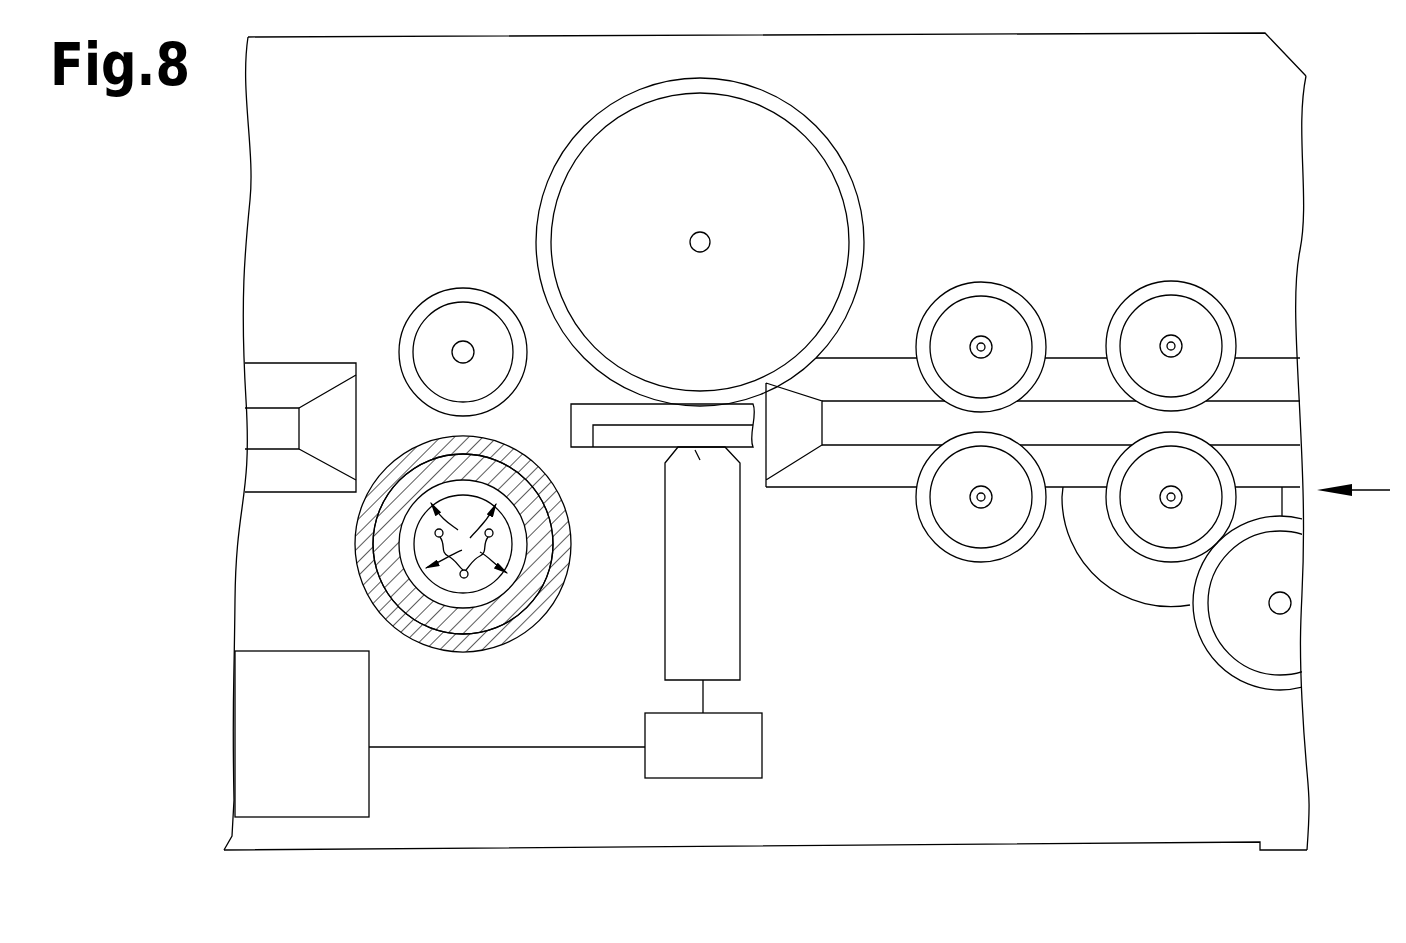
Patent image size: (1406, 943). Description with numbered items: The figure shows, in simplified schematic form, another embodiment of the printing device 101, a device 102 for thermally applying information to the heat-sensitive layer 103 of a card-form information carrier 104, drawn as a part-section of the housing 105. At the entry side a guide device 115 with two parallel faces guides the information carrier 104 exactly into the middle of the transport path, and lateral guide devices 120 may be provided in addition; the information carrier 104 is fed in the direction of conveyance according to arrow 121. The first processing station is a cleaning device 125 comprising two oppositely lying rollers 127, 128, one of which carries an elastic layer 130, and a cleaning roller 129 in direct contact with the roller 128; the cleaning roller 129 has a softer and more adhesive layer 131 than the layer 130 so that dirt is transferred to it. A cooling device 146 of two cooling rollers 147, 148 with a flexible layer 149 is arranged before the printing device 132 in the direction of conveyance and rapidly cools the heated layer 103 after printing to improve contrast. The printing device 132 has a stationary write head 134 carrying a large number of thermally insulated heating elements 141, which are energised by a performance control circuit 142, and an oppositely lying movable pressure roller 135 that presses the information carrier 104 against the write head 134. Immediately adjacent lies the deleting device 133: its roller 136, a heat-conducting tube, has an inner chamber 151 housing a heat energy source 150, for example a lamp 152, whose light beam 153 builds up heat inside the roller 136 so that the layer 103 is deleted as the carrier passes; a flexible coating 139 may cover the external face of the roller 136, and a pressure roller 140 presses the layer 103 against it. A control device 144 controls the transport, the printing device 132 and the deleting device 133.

The printing device 101 is at (177, 212).
The device 102 is at (218, 268).
The heat-sensitive layer 103 is at (640, 435).
The information carrier 104 is at (602, 462).
The housing 105 is at (975, 772).
The guide device 115 is at (272, 327).
The lateral guide devices 120 is at (880, 519).
The arrow 121 is at (1385, 490).
The cleaning device 125 is at (1231, 244).
The roller 127 is at (1175, 313).
The roller 128 is at (1153, 522).
The cleaning roller 129 is at (1268, 641).
The elastic layer 130 is at (1230, 338).
The layer 131 is at (1260, 690).
The printing device 132 is at (879, 129).
The deleting device 133 is at (402, 210).
The write head 134 is at (717, 620).
The pressure roller 135 is at (798, 243).
The roller 136 is at (498, 660).
The coating 139 is at (470, 652).
The pressure roller 140 is at (458, 313).
The heating elements 141 is at (697, 452).
The performance control circuit 142 is at (738, 747).
The control device 144 is at (282, 728).
The cooling device 146 is at (1000, 230).
The cooling roller 147 is at (990, 335).
The cooling roller 148 is at (977, 532).
The flexible layer 149 is at (1030, 318).
The heat energy source 150 is at (501, 653).
The inner chamber 151 is at (434, 630).
The lamp 152 is at (506, 607).
The light beam 153 is at (440, 562).